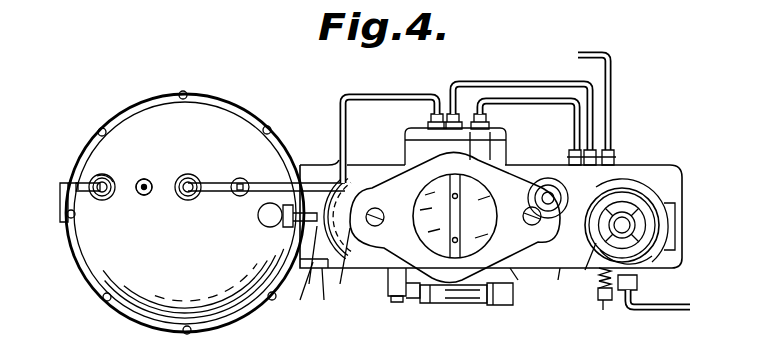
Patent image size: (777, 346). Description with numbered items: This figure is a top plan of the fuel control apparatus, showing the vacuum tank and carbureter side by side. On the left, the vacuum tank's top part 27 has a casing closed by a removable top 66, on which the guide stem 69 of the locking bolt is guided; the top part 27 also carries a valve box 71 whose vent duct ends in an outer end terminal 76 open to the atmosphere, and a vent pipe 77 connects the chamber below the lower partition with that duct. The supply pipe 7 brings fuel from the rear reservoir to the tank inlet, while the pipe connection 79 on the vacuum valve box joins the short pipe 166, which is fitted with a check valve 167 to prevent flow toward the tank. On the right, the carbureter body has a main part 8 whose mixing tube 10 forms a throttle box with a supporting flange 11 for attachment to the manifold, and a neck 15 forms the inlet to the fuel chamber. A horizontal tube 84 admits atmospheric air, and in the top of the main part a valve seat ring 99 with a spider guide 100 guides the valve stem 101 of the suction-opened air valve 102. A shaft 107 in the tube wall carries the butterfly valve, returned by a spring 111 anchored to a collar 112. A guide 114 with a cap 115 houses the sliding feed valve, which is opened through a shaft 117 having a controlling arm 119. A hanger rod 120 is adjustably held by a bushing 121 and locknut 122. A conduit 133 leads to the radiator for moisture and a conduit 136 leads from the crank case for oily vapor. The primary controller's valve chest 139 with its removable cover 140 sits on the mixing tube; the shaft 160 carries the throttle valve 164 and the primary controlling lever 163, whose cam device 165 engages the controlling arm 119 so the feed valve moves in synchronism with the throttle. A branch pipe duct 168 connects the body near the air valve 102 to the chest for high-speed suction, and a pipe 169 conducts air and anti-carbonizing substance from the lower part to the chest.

The supply pipe 7 is at (470, 230).
The main part 8 is at (559, 282).
The mixing tube 10 is at (440, 163).
The supporting flange 11 is at (337, 242).
The neck 15 is at (297, 292).
The top part 27 is at (118, 268).
The removable top 66 is at (144, 179).
The guide stem 69 is at (146, 196).
The valve box 71 is at (98, 174).
The outer end terminal 76 is at (87, 182).
The vent pipe 77 is at (60, 197).
The pipe connection 79 is at (189, 177).
The horizontal tube 84 is at (678, 214).
The valve seat ring 99 is at (652, 210).
The spider guide 100 is at (626, 216).
The valve stem 101 is at (590, 272).
The valve 102 is at (652, 256).
The shaft 107 is at (606, 312).
The spring 111 is at (601, 283).
The collar 112 is at (602, 302).
The guide 114 is at (375, 228).
The cap 115 is at (320, 299).
The shaft 117 is at (396, 304).
The controlling arm 119 is at (414, 300).
The hanger rod 120 is at (540, 180).
The bushing 121 is at (558, 197).
The locknut 122 is at (562, 182).
The conduit 133 is at (612, 122).
The conduit 136 is at (665, 311).
The valve chest 139 is at (422, 140).
The removable cover 140 is at (504, 135).
The shaft 160 is at (503, 306).
The primary controlling lever 163 is at (516, 278).
The throttle valve 164 is at (484, 238).
The cam device 165 is at (442, 305).
The short pipe 166 is at (372, 95).
The check valve 167 is at (238, 178).
The branch pipe duct 168 is at (529, 99).
The pipe 169 is at (484, 83).